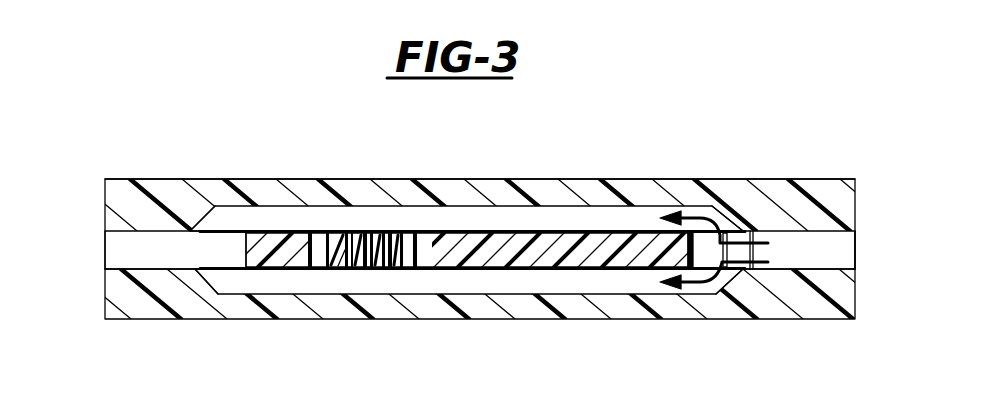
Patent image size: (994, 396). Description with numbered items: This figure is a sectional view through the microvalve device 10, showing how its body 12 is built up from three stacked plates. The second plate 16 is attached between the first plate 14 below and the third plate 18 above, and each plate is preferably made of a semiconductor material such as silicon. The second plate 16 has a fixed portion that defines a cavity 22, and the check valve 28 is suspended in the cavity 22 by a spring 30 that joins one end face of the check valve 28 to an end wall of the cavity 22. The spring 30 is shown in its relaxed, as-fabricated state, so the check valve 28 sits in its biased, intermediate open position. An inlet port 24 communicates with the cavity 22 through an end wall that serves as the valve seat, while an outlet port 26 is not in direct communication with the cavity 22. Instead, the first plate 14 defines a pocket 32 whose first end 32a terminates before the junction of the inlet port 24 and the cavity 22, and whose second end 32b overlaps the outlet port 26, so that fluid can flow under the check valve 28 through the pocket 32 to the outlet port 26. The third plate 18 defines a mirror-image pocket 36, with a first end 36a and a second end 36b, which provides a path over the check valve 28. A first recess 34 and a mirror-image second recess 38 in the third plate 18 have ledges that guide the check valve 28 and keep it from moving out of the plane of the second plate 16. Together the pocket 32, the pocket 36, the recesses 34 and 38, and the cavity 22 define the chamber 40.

The microvalve device 10 is at (93, 124).
The body 12 is at (189, 162).
The first plate 14 is at (102, 303).
The second plate 16 is at (280, 269).
The third plate 18 is at (103, 180).
The cavity 22 is at (703, 262).
The inlet port 24 is at (845, 252).
The outlet port 26 is at (112, 246).
The check valve 28 is at (562, 229).
The spring 30 is at (335, 231).
The pocket 32 is at (372, 282).
The first end of pocket 32a is at (728, 278).
The second end of pocket 32b is at (223, 282).
The first recess 34 is at (247, 248).
The pocket 36 is at (467, 218).
The first end of pocket 36a is at (717, 213).
The second end of pocket 36b is at (220, 210).
The second recess 38 is at (413, 231).
The chamber 40 is at (635, 215).